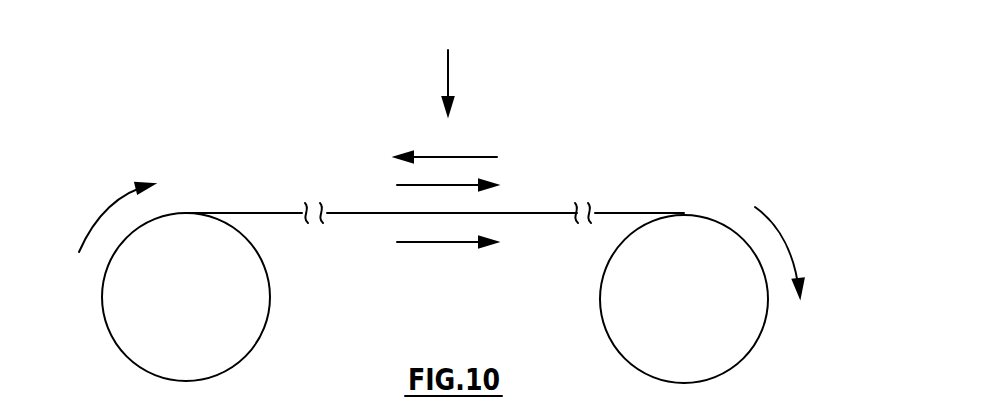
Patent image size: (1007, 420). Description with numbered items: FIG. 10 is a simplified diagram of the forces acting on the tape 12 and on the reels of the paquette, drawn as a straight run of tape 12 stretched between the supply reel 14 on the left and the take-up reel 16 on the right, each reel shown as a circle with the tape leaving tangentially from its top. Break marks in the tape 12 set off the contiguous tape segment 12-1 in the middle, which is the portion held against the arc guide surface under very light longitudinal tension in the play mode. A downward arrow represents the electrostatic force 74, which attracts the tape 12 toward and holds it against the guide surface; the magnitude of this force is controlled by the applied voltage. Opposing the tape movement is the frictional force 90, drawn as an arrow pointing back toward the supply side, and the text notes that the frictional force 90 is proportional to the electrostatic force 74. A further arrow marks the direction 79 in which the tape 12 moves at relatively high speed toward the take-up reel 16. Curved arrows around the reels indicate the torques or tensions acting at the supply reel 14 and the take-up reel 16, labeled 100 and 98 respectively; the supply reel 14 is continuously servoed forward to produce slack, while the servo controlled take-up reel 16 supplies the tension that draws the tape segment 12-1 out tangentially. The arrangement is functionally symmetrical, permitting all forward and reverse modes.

The tape 12 is at (435, 189).
The tape segment 12-1 is at (377, 213).
The supply reel 14 is at (227, 368).
The take-up reel 16 is at (727, 372).
The electrostatic force 74 is at (448, 70).
The direction 79 is at (418, 245).
The frictional forces 90 is at (473, 157).
The take-up tension T_T 98 is at (792, 252).
The supply tension T_S 100 is at (112, 205).